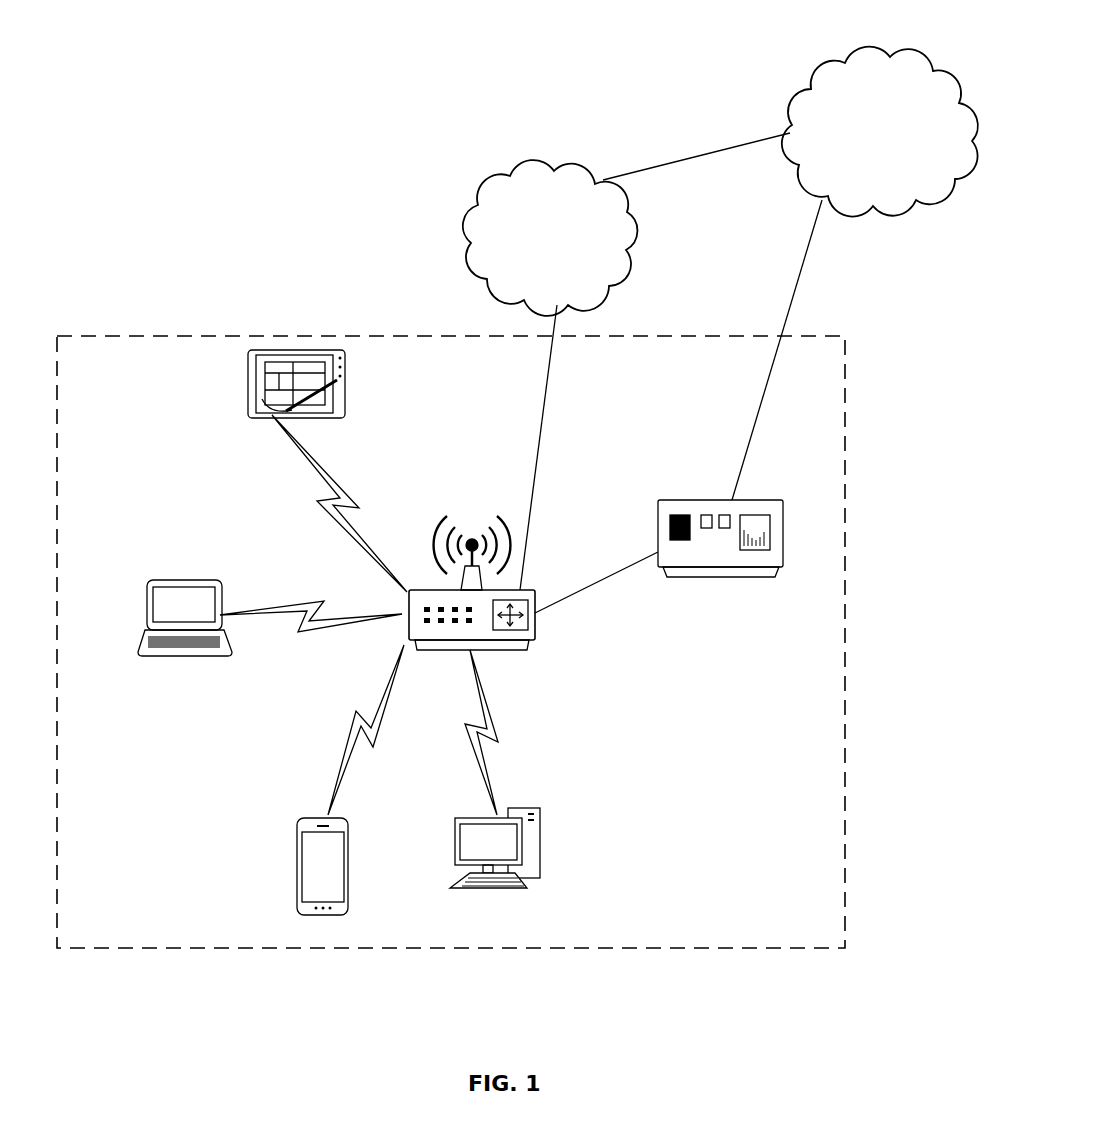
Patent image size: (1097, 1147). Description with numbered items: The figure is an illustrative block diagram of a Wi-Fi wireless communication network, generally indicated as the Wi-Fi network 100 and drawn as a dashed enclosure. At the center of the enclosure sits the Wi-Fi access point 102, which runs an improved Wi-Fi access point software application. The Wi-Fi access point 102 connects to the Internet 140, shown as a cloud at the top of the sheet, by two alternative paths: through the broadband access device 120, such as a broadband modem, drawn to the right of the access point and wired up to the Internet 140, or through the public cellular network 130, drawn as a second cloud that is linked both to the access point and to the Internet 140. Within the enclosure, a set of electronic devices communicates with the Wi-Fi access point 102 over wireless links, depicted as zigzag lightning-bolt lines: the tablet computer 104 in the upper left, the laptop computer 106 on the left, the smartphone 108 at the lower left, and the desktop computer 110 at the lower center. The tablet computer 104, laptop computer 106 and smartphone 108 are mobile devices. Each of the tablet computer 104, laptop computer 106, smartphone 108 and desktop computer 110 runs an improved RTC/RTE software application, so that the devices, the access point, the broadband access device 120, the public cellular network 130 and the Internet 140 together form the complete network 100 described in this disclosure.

The Wi-Fi network 100 is at (198, 335).
The Wi-Fi access point 102 is at (527, 650).
The tablet computer 104 is at (346, 400).
The laptop computer 106 is at (148, 600).
The smartphone 108 is at (303, 855).
The desktop computer 110 is at (540, 878).
The broadband access device 120 is at (725, 577).
The public cellular network 130 is at (468, 237).
The Internet 140 is at (818, 68).